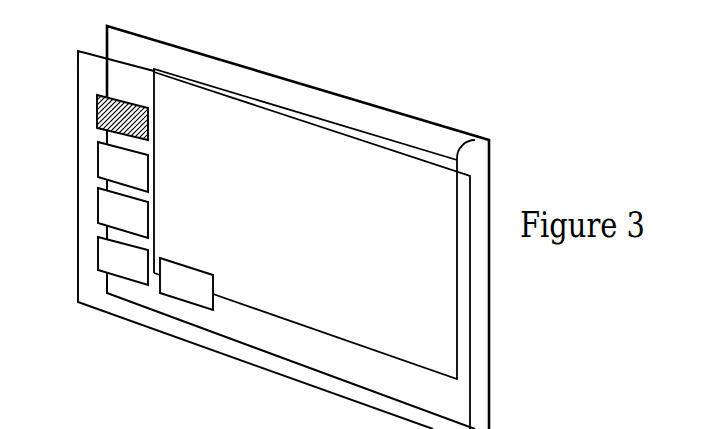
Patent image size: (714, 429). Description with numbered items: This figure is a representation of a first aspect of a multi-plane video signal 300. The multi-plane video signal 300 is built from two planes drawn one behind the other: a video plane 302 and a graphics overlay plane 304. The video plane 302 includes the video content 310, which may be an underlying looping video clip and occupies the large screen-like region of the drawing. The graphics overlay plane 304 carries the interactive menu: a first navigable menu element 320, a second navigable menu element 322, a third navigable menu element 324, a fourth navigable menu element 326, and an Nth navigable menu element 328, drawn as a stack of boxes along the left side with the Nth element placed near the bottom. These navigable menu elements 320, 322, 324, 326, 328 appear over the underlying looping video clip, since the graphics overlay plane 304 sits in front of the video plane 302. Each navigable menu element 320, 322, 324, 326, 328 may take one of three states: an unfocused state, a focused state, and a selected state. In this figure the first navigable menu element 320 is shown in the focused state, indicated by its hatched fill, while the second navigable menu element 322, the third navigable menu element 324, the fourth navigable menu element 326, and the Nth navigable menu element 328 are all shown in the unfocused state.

The multi-plane video signal 300 is at (400, 91).
The video plane 302 is at (118, 44).
The graphics overlay plane 304 is at (97, 76).
The video content 310 is at (466, 143).
The first navigable menu element 320 is at (97, 118).
The second navigable menu element 322 is at (97, 164).
The third navigable menu element 324 is at (97, 212).
The fourth navigable menu element 326 is at (97, 258).
The Nth navigable menu element 328 is at (177, 298).